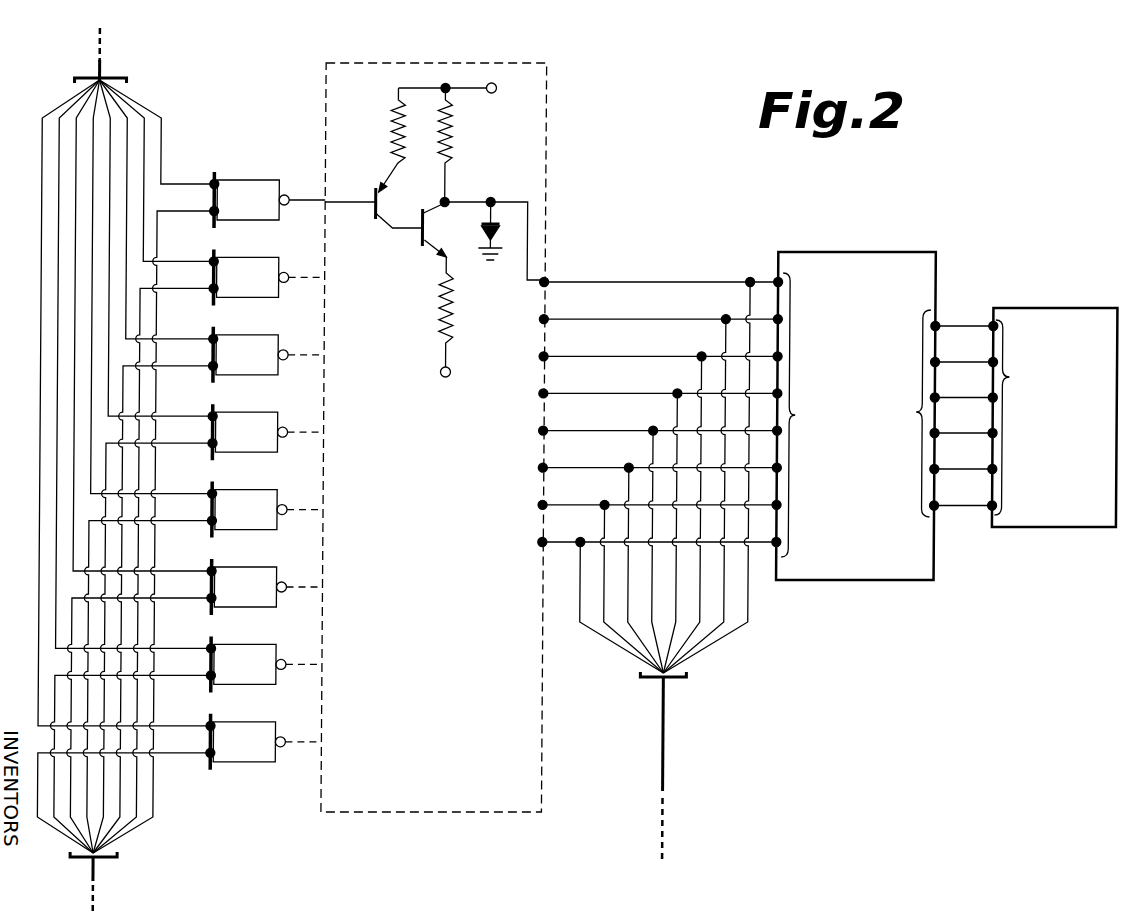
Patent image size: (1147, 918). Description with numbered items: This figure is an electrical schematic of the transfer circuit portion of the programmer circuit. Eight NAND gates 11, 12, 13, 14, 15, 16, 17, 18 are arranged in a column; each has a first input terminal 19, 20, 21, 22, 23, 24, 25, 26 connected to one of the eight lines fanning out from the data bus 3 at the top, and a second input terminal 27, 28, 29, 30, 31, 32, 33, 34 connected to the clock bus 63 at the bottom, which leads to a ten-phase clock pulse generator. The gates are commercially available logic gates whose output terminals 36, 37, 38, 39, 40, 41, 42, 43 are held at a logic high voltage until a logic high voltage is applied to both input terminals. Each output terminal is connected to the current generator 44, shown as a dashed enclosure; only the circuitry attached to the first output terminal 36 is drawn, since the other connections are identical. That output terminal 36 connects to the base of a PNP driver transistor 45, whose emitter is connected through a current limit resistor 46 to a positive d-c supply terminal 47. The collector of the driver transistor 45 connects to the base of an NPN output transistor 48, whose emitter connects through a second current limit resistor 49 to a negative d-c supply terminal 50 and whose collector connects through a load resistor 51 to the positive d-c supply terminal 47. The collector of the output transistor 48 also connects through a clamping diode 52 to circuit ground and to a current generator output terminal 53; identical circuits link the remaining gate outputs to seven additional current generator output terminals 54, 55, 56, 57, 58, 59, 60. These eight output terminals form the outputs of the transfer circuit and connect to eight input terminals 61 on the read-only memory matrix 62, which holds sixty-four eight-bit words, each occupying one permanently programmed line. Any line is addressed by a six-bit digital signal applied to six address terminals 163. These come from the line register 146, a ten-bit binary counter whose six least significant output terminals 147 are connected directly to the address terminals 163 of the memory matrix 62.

The data bus 3 is at (95, 62).
The NAND gate 11 is at (258, 214).
The NAND gate 12 is at (258, 291).
The NAND gate 13 is at (258, 369).
The NAND gate 14 is at (258, 446).
The NAND gate 15 is at (258, 524).
The NAND gate 16 is at (258, 601).
The NAND gate 17 is at (258, 678).
The NAND gate 18 is at (258, 756).
The first input terminal 19 is at (212, 180).
The first input terminal 20 is at (212, 258).
The first input terminal 21 is at (212, 336).
The first input terminal 22 is at (212, 414).
The first input terminal 23 is at (212, 492).
The first input terminal 24 is at (212, 569).
The first input terminal 25 is at (212, 647).
The first input terminal 26 is at (212, 724).
The second input terminal 27 is at (212, 211).
The second input terminal 28 is at (212, 288).
The second input terminal 29 is at (212, 366).
The second input terminal 30 is at (212, 443).
The second input terminal 31 is at (212, 521).
The second input terminal 32 is at (212, 598).
The second input terminal 33 is at (212, 675).
The second input terminal 34 is at (212, 753).
The output terminal 36 is at (288, 196).
The output terminal 37 is at (288, 273).
The output terminal 38 is at (288, 351).
The output terminal 39 is at (288, 428).
The output terminal 40 is at (288, 506).
The output terminal 41 is at (288, 583).
The output terminal 42 is at (288, 660).
The output terminal 43 is at (288, 738).
The current generator 44 is at (548, 185).
The PNP driver transistor 45 is at (372, 198).
The current limit resistor 46 is at (392, 110).
The positive d-c supply terminal 47 is at (497, 93).
The NPN output transistor 48 is at (418, 238).
The second current limit resistor 49 is at (440, 302).
The negative d-c supply terminal 50 is at (452, 376).
The load resistor 51 is at (450, 135).
The clamping diode 52 is at (502, 242).
The current generator output terminal 53 is at (548, 280).
The current generator output terminal 54 is at (548, 317).
The current generator output terminal 55 is at (548, 354).
The current generator output terminal 56 is at (548, 391).
The current generator output terminal 57 is at (548, 429).
The current generator output terminal 58 is at (548, 466).
The current generator output terminal 59 is at (548, 503).
The current generator output terminal 60 is at (548, 540).
The input terminals 61 is at (806, 415).
The read-only memory matrix 62 is at (867, 254).
The clock bus 63 is at (110, 866).
The line register 146 is at (1046, 304).
The output terminals 147 is at (1028, 417).
The address terminals 163 is at (904, 413).